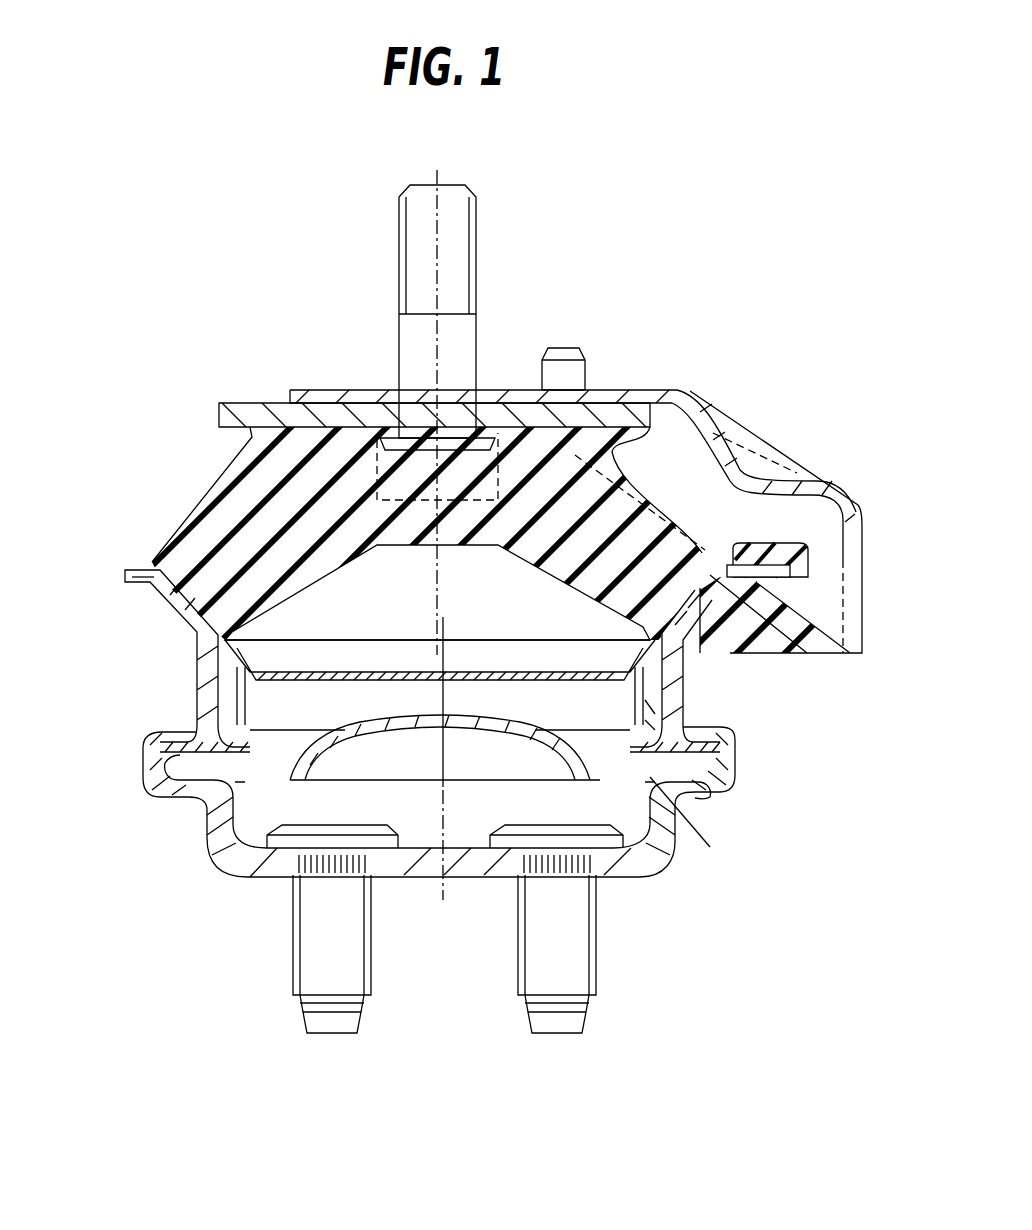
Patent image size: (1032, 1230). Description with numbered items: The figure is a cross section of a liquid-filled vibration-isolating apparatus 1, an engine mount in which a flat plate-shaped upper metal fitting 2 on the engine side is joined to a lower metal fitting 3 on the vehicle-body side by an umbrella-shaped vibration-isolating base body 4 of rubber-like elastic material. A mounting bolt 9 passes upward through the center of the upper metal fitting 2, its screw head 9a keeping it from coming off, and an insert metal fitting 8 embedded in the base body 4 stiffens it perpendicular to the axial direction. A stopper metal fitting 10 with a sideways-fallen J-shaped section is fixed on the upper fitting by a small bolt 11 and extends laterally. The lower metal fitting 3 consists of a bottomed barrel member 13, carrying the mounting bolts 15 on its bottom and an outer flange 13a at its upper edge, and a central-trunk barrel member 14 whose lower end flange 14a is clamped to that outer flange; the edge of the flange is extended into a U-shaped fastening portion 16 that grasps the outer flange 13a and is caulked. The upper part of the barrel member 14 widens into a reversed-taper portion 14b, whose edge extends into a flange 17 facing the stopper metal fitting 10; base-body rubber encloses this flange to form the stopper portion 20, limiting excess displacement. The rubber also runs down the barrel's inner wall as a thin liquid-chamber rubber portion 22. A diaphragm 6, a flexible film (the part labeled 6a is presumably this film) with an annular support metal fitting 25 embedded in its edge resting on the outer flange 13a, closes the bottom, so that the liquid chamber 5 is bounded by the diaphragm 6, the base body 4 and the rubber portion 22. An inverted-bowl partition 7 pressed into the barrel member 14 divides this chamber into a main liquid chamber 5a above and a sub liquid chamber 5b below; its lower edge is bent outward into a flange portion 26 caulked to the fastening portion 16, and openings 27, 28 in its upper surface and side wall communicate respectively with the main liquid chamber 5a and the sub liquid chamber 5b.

The liquid-filled vibration-isolating apparatus 1 is at (734, 354).
The upper metal fitting 2 is at (262, 418).
The lower metal fitting 3 is at (200, 844).
The vibration-isolating base body 4 is at (183, 553).
The liquid chamber 5 is at (312, 658).
The main liquid chamber 5a is at (505, 610).
The sub liquid chamber 5b is at (575, 719).
The diaphragm 6 is at (413, 765).
The diaphragm membrane 6a is at (465, 725).
The partition 7 is at (192, 558).
The insert metal fitting 8 is at (512, 427).
The mounting bolt 9 is at (458, 236).
The screw head 9a is at (412, 438).
The stopper metal fitting 10 is at (640, 395).
The small bolt 11 is at (572, 355).
The bottomed barrel member 13 is at (245, 876).
The outer flange 13a is at (160, 790).
The central-trunk barrel member 14 is at (208, 650).
The lower end flange 14a is at (180, 735).
The reversed-taper portion 14b is at (165, 586).
The mounting bolts 15 is at (572, 965).
The fastening portion 16 is at (145, 763).
The flange 17 is at (790, 585).
The stopper portion 20 is at (795, 555).
The liquid-chamber rubber portion 22 is at (215, 683).
The support metal fitting 25 is at (650, 777).
The flange portion 26 is at (736, 765).
The opening 27 is at (660, 680).
The opening 28 is at (258, 690).